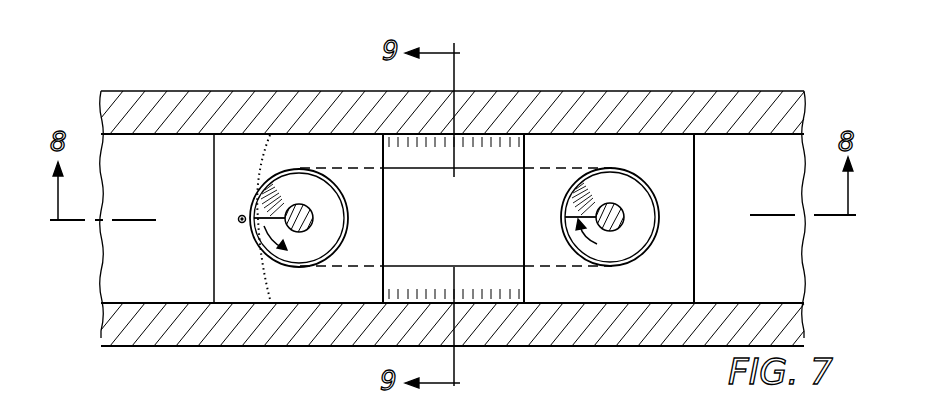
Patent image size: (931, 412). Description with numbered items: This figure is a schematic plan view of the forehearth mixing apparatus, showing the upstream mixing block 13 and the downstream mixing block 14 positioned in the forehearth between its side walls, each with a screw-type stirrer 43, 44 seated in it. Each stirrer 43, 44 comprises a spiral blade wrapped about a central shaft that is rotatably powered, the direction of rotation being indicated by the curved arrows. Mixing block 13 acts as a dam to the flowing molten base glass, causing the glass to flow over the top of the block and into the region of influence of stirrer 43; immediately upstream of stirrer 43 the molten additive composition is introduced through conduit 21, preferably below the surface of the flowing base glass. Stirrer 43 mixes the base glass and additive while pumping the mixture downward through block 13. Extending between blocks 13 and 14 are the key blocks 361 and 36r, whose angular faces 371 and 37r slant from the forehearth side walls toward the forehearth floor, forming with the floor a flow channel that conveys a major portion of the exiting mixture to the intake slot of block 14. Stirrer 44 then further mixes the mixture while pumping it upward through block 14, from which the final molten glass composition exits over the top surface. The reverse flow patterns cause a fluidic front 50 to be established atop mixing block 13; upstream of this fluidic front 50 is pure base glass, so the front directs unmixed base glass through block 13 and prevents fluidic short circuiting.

The mixing block 13 is at (347, 293).
The mixing block 14 is at (667, 284).
The conduit 21 is at (239, 217).
The screw-type stirrer 43 is at (284, 204).
The screw-type stirrer 44 is at (592, 202).
The fluidic front 50 is at (263, 163).
The key block 361 is at (416, 170).
The angular face 371 is at (483, 143).
The key block 36r is at (392, 266).
The angular face 37r is at (471, 290).